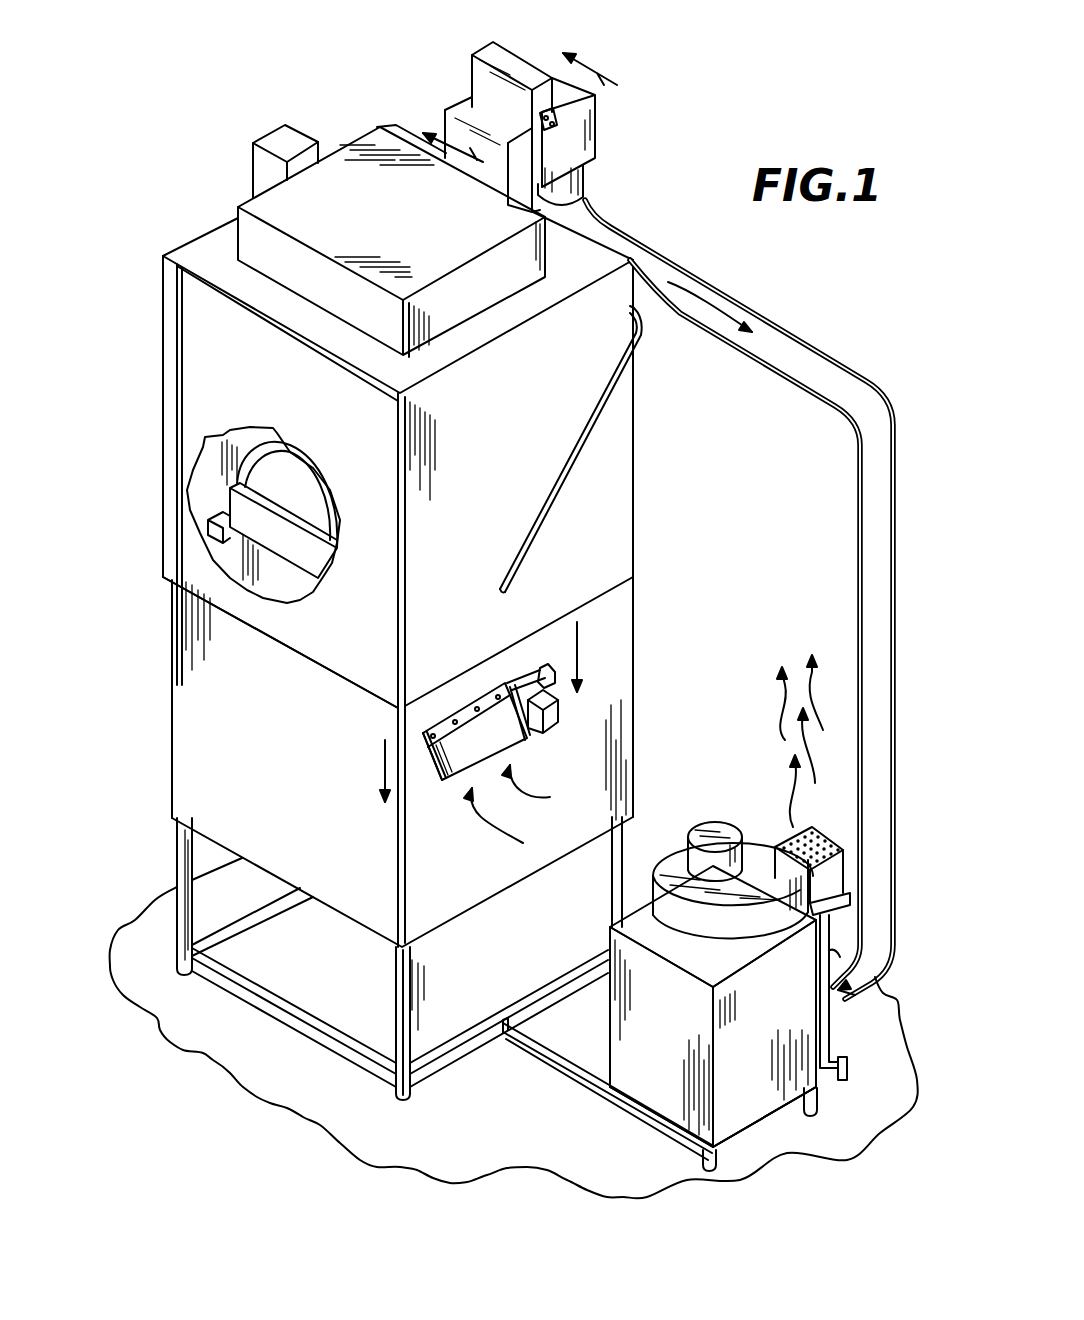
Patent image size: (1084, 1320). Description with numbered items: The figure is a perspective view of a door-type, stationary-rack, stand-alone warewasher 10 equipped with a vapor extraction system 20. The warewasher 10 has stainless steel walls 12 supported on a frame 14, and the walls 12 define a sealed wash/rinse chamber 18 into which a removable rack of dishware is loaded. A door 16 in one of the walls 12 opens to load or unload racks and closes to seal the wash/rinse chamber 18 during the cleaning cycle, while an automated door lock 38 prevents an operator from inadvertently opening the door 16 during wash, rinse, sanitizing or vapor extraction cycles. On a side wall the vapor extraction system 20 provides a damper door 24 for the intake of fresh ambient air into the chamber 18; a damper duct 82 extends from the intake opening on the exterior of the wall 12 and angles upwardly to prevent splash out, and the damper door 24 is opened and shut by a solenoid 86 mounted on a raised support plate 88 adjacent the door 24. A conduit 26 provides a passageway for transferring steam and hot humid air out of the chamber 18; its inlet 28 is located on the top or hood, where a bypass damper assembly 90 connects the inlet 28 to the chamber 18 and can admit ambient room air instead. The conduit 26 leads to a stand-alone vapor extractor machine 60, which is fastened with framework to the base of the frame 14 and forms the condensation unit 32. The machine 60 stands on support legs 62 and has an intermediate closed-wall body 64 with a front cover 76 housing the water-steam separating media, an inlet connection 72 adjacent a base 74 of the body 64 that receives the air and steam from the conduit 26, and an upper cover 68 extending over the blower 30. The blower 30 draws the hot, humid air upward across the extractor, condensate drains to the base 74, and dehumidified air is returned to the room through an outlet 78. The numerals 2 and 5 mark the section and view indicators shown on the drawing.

The warewasher 10 is at (137, 270).
The walls 12 is at (514, 407).
The frame 14 is at (177, 853).
The door 16 is at (254, 376).
The wash/rinse chamber 18 is at (293, 587).
The vapor extraction system 20 is at (600, 1034).
The damper door 24 is at (495, 738).
The conduit 26 is at (810, 380).
The inlet 28 is at (587, 203).
The blower 30 is at (683, 850).
The condensation unit 32 is at (660, 1090).
The door lock 38 is at (277, 130).
The vapor extractor machine 60 is at (600, 1101).
The support legs 62 is at (820, 1107).
The intermediate closed-wall body 64 is at (644, 1047).
The upper cover 68 is at (753, 857).
The inlet connection 72 is at (850, 1020).
The base 74 is at (750, 1128).
The front cover 76 is at (751, 1035).
The outlet 78 is at (822, 833).
The damper duct 82 is at (427, 773).
The solenoid 86 is at (556, 712).
The raised support plate 88 is at (538, 673).
The bypass damper assembly 90 is at (593, 130).
The section line 2- 2 is at (480, 697).
The view direction 5 is at (528, 118).